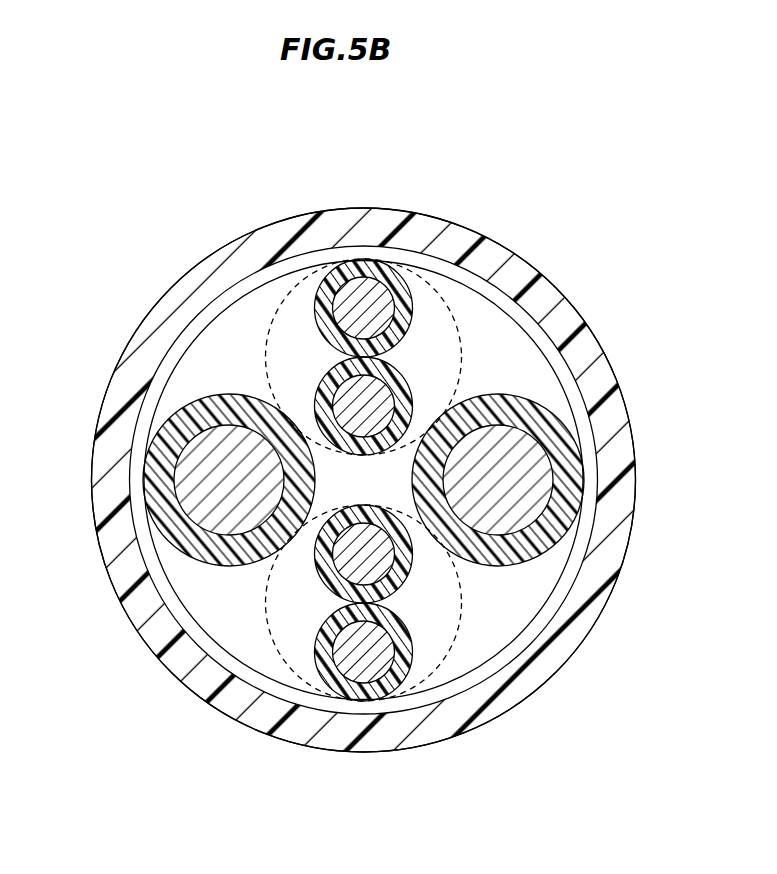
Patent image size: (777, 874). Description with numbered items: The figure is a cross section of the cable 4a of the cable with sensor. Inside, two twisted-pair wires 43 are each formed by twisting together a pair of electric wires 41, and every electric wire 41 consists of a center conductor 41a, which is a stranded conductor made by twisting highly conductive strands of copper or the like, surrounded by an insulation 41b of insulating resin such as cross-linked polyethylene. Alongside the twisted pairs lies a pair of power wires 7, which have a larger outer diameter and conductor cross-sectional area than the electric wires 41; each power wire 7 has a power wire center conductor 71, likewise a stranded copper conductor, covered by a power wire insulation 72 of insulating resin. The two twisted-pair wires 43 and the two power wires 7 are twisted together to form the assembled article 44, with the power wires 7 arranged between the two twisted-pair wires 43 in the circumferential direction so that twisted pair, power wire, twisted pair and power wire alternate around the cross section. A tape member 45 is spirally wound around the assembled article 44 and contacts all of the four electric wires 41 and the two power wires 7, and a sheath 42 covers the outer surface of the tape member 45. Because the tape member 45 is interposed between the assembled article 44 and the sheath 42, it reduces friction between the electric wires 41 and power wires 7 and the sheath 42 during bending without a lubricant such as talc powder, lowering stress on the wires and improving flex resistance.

The cable 4a is at (127, 227).
The power wire 7 is at (173, 410).
The power wire center conductor 71 is at (522, 460).
The power wire insulation 72 is at (567, 473).
The electric wire 41 is at (320, 294).
The center conductor 41a is at (358, 298).
The insulation 41b is at (375, 290).
The sheath 42 is at (603, 383).
The twisted-pair wire 43 is at (410, 283).
The assembled article 44 is at (492, 582).
The tape member 45 is at (570, 573).